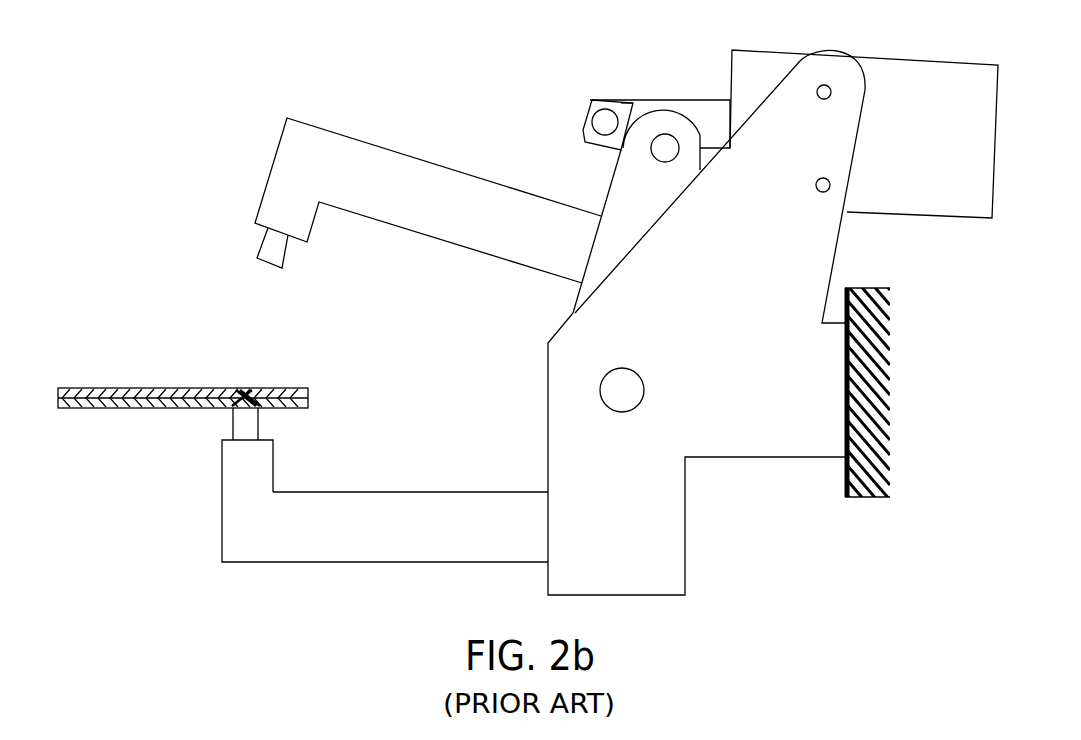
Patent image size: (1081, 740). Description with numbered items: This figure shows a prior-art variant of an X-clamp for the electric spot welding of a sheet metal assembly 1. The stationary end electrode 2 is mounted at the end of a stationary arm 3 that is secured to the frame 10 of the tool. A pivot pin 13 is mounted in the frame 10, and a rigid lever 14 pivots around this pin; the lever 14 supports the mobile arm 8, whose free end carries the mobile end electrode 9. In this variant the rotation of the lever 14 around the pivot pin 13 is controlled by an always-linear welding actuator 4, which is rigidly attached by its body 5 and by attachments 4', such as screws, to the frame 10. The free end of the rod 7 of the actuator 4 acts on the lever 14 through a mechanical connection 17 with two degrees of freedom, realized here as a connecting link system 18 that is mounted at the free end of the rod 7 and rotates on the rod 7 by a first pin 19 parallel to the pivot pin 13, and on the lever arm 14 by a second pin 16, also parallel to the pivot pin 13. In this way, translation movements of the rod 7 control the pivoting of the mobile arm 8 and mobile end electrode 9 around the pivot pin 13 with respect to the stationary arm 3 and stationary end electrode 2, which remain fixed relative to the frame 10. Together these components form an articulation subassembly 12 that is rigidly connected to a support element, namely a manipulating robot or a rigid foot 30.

The sheet metal assembly 1 is at (205, 385).
The stationary end electrode 2 is at (240, 418).
The stationary arm 3 is at (285, 520).
The welding actuator 4 is at (895, 134).
The attachments 4' is at (897, 175).
The body 5 is at (898, 100).
The rod 7 is at (703, 110).
The mobile arm 8 is at (300, 165).
The mobile end electrode 9 is at (265, 240).
The frame 10 is at (782, 395).
The articulation subassembly 12 is at (840, 258).
The pivot pin 13 is at (625, 392).
The rigid lever 14 is at (628, 222).
The second pin 16 is at (666, 140).
The mechanical connection 17 is at (582, 108).
The connecting link system 18 is at (628, 102).
The first pin 19 is at (600, 106).
The rigid foot 30 is at (875, 445).